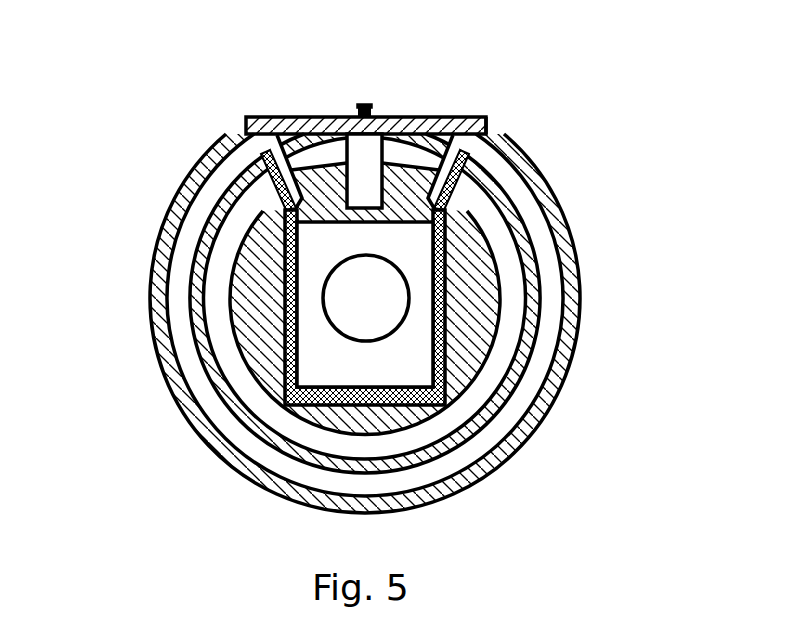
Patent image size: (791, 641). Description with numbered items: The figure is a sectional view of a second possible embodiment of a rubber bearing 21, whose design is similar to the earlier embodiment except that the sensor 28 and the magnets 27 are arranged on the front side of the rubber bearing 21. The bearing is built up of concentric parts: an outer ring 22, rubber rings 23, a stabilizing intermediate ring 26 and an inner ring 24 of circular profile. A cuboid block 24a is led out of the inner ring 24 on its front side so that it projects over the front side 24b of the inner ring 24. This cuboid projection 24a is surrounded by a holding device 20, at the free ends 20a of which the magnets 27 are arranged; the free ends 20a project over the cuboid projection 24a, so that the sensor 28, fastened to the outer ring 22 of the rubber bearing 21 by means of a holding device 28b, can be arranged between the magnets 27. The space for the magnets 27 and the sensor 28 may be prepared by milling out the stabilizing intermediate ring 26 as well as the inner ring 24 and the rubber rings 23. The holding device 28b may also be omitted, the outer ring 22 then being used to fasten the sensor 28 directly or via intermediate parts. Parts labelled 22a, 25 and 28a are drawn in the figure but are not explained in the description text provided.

The holding device 20 is at (286, 286).
The free ends of the holding device 20a is at (266, 192).
The rubber bearing 21 is at (170, 305).
The outer ring 22 is at (157, 345).
The top bar / cover plate 22a is at (252, 117).
The rubber rings 23 is at (505, 203).
The inner ring 24 is at (478, 393).
The cuboid block 24a is at (437, 360).
The front side of the inner ring 24b is at (478, 310).
The central conductor 25 is at (366, 298).
The stabilizing intermediate ring 26 is at (548, 236).
The magnets 27 is at (266, 147).
The sensor 28 is at (362, 160).
The pin on top bar 28a is at (368, 106).
The holding device for the sensor 28b is at (438, 118).